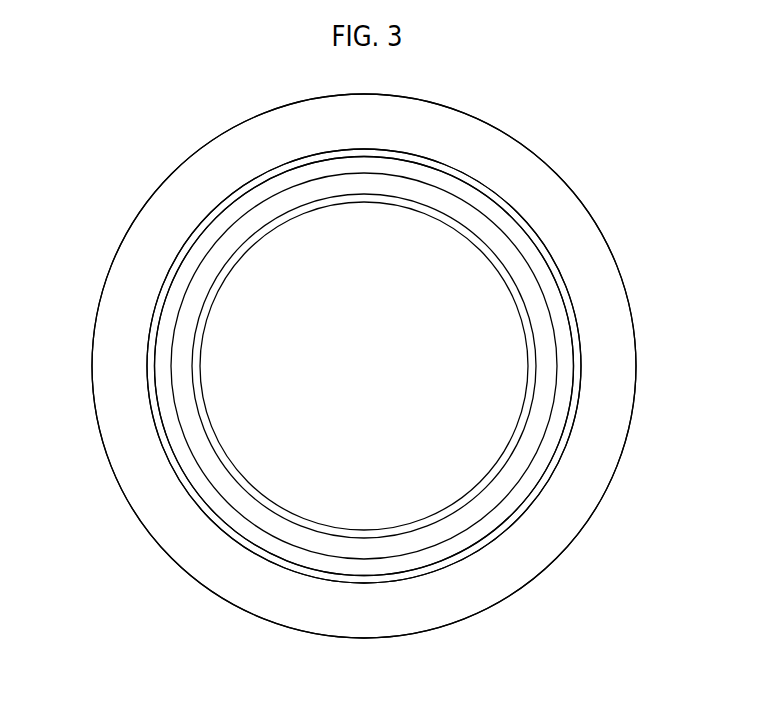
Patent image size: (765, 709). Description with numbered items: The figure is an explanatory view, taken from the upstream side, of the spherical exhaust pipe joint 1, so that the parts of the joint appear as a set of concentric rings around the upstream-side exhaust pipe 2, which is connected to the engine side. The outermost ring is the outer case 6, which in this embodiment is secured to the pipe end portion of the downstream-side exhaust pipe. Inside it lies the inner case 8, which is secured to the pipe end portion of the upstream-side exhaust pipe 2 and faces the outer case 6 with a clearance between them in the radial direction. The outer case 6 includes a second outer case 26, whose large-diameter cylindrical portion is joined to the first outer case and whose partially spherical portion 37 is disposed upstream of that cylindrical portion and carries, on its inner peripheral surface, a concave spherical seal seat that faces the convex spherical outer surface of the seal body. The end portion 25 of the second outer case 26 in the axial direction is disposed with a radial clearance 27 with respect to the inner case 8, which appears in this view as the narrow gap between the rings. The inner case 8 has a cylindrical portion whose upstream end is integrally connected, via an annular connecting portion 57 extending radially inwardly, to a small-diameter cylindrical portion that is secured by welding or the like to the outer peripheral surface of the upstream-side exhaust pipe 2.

The spherical exhaust pipe joint 1 is at (182, 162).
The upstream-side exhaust pipe 2 is at (198, 363).
The outer case 6 is at (173, 198).
The inner case 8 is at (212, 233).
The end portion 25 is at (538, 228).
The second outer case 26 is at (542, 178).
The radial clearance 27 is at (535, 255).
The partially spherical portion 37 is at (150, 227).
The annular connecting portion 57 is at (185, 270).